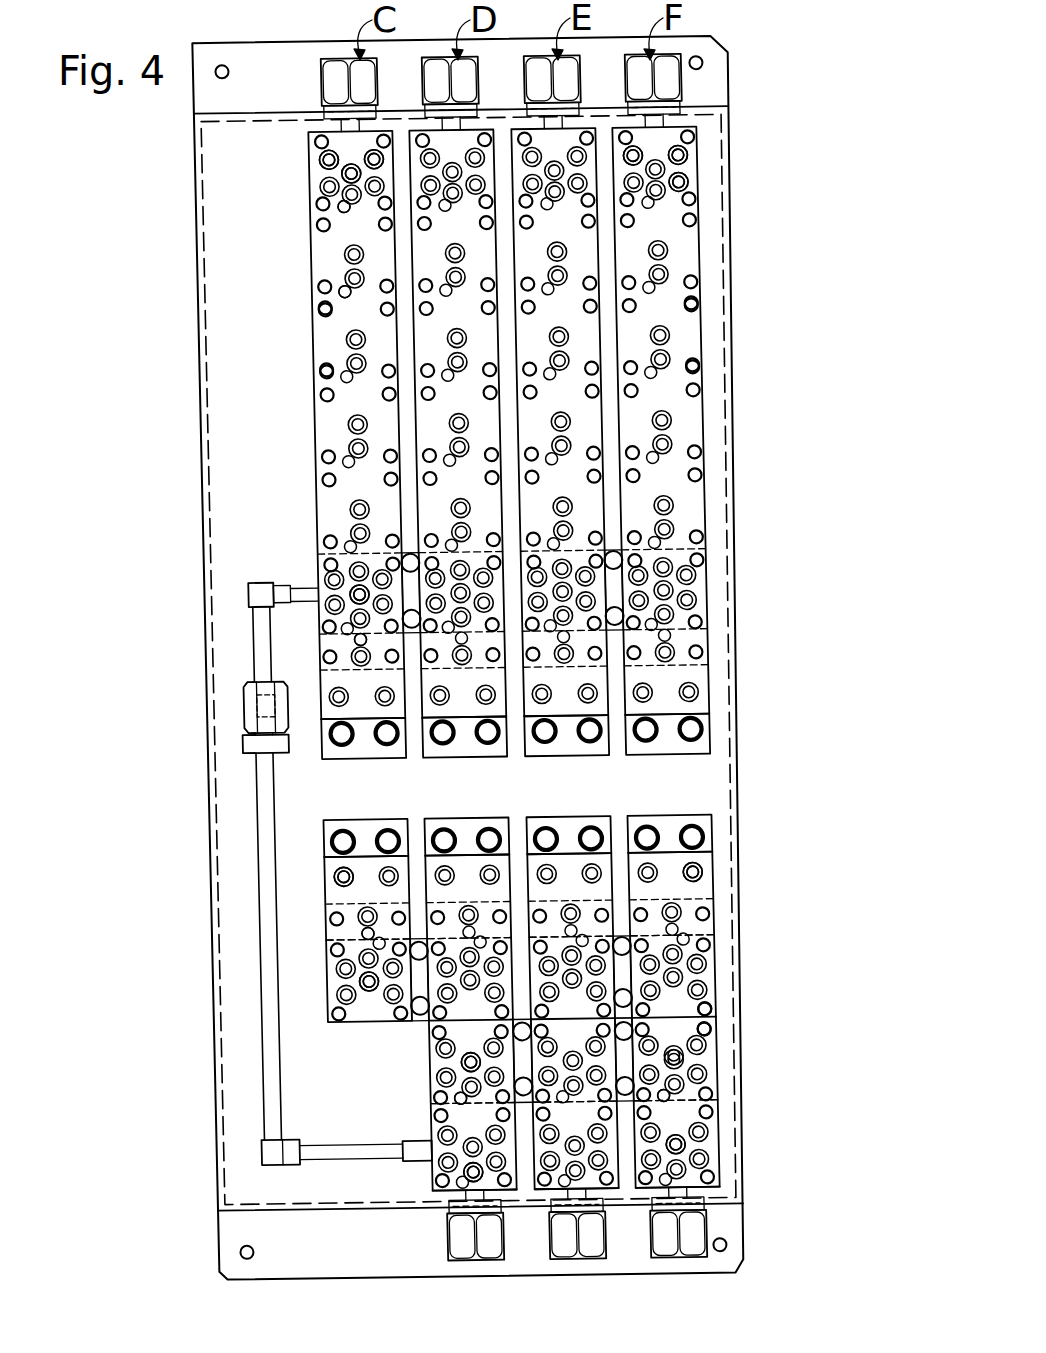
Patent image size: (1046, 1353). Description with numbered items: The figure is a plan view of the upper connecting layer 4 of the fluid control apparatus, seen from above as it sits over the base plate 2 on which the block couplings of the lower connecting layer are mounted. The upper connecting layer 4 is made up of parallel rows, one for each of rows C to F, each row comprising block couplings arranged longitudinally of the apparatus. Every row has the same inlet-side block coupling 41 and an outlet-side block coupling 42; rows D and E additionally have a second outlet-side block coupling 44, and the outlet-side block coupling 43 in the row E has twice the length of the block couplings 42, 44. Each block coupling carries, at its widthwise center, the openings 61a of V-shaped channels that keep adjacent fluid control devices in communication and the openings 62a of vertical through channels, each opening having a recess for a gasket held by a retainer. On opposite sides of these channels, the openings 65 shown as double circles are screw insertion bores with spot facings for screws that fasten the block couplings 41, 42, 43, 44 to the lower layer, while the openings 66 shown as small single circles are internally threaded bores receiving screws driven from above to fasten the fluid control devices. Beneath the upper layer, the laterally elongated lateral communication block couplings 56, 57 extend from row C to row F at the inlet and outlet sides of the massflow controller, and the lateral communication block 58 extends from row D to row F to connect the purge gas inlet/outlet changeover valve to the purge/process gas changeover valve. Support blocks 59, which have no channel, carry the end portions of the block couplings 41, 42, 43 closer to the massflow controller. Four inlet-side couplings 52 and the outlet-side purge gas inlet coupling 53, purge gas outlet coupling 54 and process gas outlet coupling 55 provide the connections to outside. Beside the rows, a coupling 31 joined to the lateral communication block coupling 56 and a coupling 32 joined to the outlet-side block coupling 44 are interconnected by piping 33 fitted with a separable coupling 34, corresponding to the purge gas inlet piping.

The base plate 2 is at (213, 882).
The upper connecting layer 4 is at (740, 204).
The coupling 31 is at (248, 596).
The coupling 32 is at (317, 1153).
The piping 33 is at (262, 1014).
The separable coupling 34 is at (243, 705).
The inlet-side block coupling 41 is at (310, 430).
The outlet-side block coupling 42 is at (324, 897).
The outlet-side block coupling 43 is at (624, 968).
The outlet-side block coupling 44 is at (434, 1085).
The inlet-side coupling 52 is at (326, 70).
The purge gas inlet coupling 53 is at (465, 1255).
The purge gas outlet coupling 54 is at (568, 1250).
The process gas outlet coupling 55 is at (663, 1250).
The lateral communication block coupling 56 is at (613, 593).
The lateral communication block coupling 57 is at (702, 950).
The lateral communication block 58 is at (624, 1062).
The support block 59 is at (700, 743).
The opening of V-shaped channel 61a is at (342, 207).
The opening of vertical channel 62a is at (350, 173).
The screw insertion bore 65 is at (329, 160).
The internally threaded bore 66 is at (323, 370).